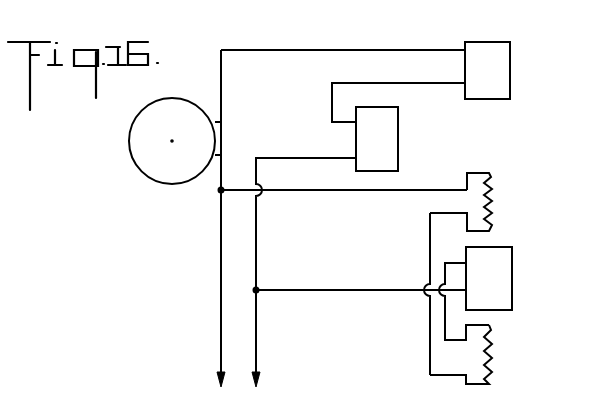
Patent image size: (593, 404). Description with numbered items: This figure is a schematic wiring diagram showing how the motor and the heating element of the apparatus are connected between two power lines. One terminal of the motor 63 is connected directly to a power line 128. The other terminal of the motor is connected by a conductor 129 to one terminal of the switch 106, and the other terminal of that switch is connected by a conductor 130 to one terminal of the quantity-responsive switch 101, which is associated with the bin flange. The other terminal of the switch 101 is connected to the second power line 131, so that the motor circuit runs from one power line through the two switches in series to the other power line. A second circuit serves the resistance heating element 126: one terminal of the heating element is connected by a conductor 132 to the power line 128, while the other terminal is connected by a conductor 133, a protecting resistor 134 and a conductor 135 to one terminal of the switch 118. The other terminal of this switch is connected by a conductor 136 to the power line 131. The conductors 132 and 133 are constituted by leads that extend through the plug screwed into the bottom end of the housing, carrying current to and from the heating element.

The motor 63 is at (156, 168).
The quantity-responsive switch 101 is at (387, 140).
The switch 106 is at (497, 73).
The switch 118 is at (500, 286).
The resistance heating element 126 is at (494, 209).
The power line 128 is at (220, 313).
The conductor 129 is at (363, 50).
The conductor 130 is at (330, 96).
The second power line 131 is at (257, 256).
The conductor 132 is at (336, 193).
The conductor 133 is at (430, 252).
The protecting resistor 134 is at (494, 360).
The conductor 135 is at (445, 320).
The conductor 136 is at (319, 293).